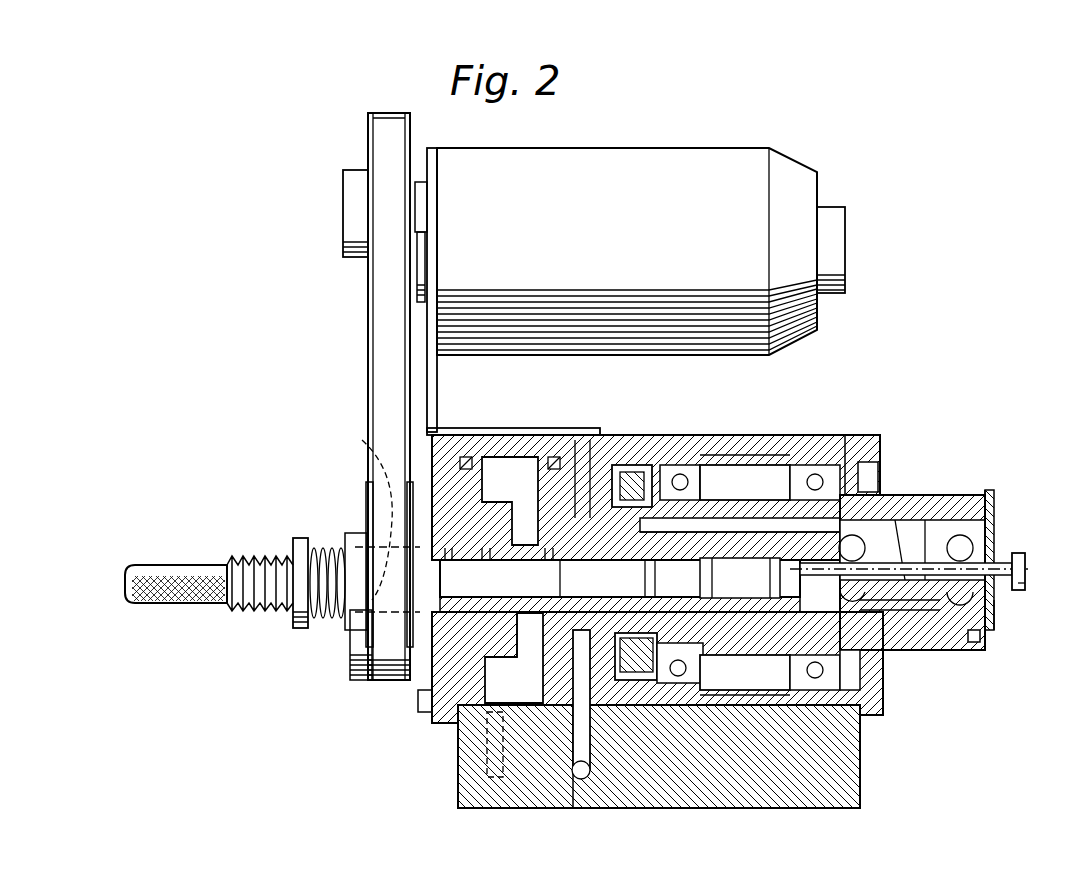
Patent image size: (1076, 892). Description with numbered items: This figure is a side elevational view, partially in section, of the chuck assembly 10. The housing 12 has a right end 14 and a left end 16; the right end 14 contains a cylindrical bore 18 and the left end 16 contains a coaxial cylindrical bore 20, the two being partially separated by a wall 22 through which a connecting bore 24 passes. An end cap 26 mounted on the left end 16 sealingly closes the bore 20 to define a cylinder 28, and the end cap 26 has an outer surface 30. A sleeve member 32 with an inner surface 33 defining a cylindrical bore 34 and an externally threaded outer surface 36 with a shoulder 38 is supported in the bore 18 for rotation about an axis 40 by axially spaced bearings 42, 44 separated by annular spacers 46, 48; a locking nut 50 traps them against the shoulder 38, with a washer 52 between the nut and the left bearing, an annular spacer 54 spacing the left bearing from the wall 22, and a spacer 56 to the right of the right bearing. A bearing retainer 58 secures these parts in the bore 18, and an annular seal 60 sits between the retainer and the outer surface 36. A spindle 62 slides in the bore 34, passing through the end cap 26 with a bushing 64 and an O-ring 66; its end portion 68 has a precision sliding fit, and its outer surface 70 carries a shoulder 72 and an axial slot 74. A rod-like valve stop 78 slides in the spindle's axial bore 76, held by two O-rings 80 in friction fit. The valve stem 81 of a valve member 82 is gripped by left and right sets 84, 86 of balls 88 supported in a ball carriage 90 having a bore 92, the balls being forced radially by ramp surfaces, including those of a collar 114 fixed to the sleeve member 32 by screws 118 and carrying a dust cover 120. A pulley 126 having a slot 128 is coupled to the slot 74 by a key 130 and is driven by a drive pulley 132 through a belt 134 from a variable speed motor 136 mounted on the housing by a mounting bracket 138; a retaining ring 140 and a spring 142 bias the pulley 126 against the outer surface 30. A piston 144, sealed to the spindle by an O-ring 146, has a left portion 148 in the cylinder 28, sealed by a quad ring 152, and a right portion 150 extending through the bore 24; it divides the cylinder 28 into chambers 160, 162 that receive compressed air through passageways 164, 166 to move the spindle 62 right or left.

The chuck assembly 10 is at (890, 345).
The housing 12 is at (832, 790).
The right end 14 is at (865, 752).
The left end 16 is at (455, 762).
The cylindrical bore 18 is at (775, 465).
The cylindrical bore 20 is at (498, 448).
The wall 22 is at (510, 501).
The bore 24 is at (630, 672).
The end cap 26 is at (426, 708).
The cylinder 28 is at (500, 690).
The outer surface 30 is at (428, 680).
The sleeve member 32 is at (927, 508).
The inner surface 33 is at (748, 518).
The bore 34 is at (856, 533).
The outer surface 36 is at (945, 530).
The shoulder 38 is at (866, 440).
The axis 40 is at (1015, 571).
The bearing 42 is at (735, 455).
The bearing 44 is at (816, 473).
The spacer 46 is at (700, 690).
The spacer 48 is at (725, 695).
The locking nut 50 is at (682, 473).
The washer 52 is at (630, 465).
The spacer 54 is at (620, 491).
The spacer 56 is at (845, 690).
The bearing retainer 58 is at (884, 708).
The annular seal 60 is at (885, 682).
The spindle 62 is at (740, 527).
The bushing 64 is at (657, 667).
The O-ring 66 is at (620, 578).
The end portion 68 is at (800, 690).
The outer surface 70 is at (668, 680).
The shoulder 72 is at (620, 589).
The slot 74 is at (325, 618).
The axial bore 76 is at (745, 672).
The valve stop 78 is at (160, 575).
The O-rings 80 is at (740, 578).
The valve stem 81 is at (1025, 580).
The valve member 82 is at (1022, 550).
The first set of balls 84 is at (878, 470).
The second set of balls 86 is at (993, 512).
The balls 88 is at (906, 570).
The ball carriage 90 is at (885, 660).
The bore 92 is at (900, 607).
The collar 114 is at (990, 488).
The screws 118 is at (980, 638).
The dust cover 120 is at (995, 612).
The pulley 126 is at (352, 668).
The slot 128 is at (362, 520).
The key 130 is at (370, 518).
The drive pulley 132 is at (368, 122).
The belt 134 is at (378, 340).
The variable speed motor 136 is at (628, 165).
The mounting bracket 138 is at (437, 388).
The retaining ring 140 is at (296, 548).
The spring 142 is at (340, 540).
The piston 144 is at (514, 658).
The O-ring 146 is at (562, 605).
The left portion 148 is at (512, 646).
The right portion 150 is at (664, 578).
The quad ring 152 is at (515, 756).
The first chamber 160 is at (492, 528).
The second chamber 162 is at (578, 448).
The first passageway 164 is at (495, 720).
The second passageway 166 is at (576, 750).